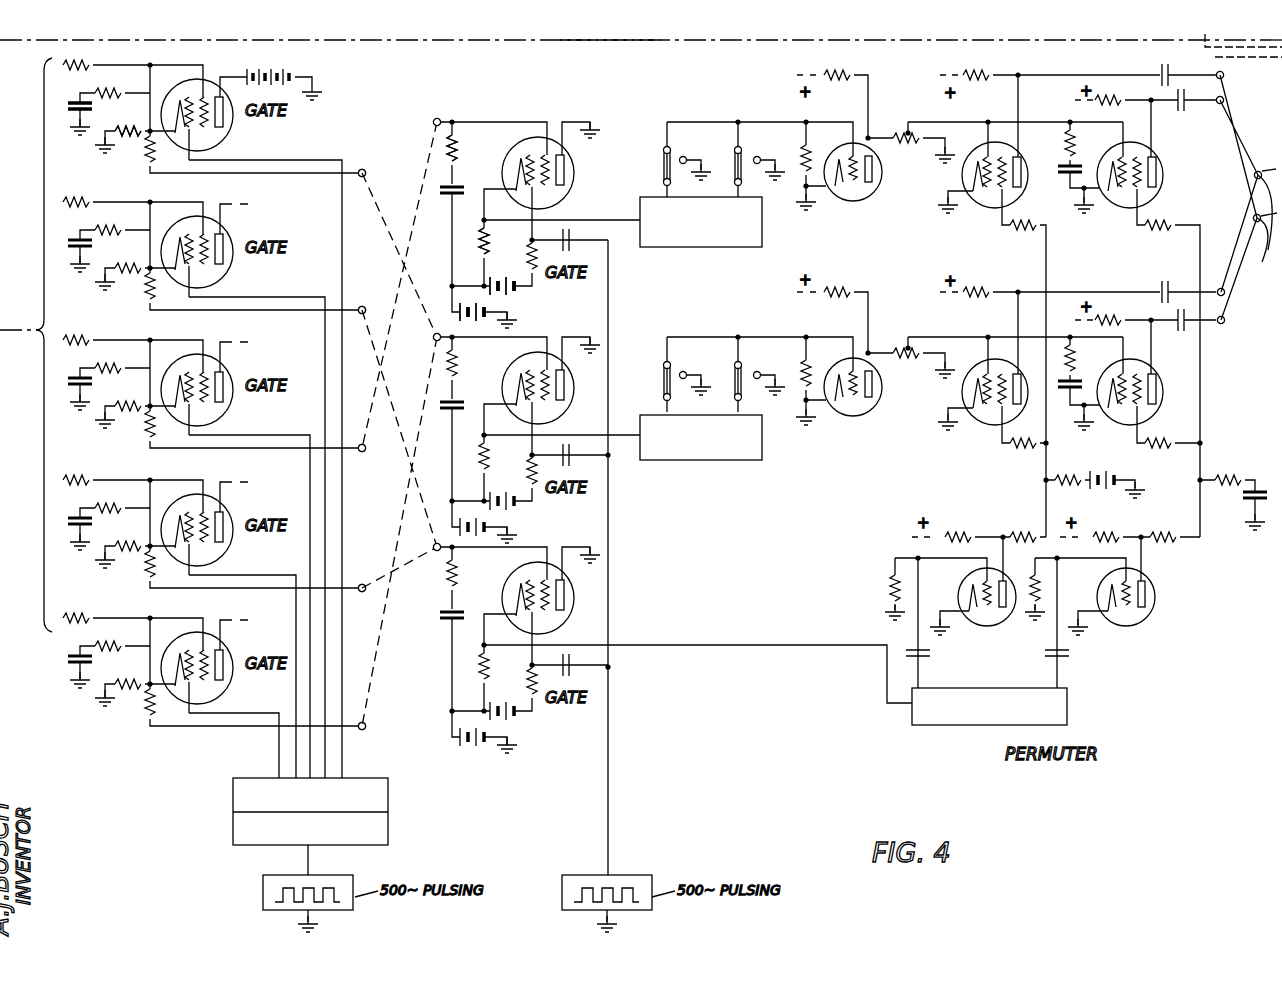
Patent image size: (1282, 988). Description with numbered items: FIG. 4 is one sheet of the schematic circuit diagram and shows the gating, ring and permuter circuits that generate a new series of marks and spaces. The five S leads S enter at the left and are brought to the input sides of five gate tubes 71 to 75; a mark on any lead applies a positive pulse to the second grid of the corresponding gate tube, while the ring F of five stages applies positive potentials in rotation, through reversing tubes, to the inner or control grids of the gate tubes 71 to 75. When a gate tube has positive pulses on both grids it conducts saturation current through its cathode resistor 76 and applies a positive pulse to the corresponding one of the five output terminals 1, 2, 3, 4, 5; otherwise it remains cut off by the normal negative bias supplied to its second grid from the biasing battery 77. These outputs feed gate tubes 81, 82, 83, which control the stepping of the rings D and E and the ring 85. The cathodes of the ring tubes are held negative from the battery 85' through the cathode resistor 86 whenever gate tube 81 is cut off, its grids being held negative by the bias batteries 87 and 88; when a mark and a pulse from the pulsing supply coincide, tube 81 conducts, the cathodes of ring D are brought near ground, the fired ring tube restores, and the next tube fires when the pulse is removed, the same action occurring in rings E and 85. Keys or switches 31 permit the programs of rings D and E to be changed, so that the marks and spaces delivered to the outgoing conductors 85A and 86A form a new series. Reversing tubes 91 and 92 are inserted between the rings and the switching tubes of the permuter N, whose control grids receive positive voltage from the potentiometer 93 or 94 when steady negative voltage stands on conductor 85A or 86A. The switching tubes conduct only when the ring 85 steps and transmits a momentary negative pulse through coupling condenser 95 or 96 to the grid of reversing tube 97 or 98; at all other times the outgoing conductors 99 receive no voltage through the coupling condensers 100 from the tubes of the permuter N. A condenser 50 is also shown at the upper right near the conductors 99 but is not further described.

The gate tube 71 is at (226, 137).
The gate tube 75 is at (226, 690).
The cathode resistor 76 is at (141, 140).
The biasing battery 77 is at (66, 122).
The gate tube 81 is at (568, 183).
The gate tube 82 is at (566, 405).
The gate tube 83 is at (506, 590).
The ring 85 is at (986, 726).
The battery 85' is at (451, 300).
The outgoing conductor 85A is at (770, 108).
The cathode resistor 86 is at (489, 252).
The outgoing conductor 86A is at (775, 325).
The bias battery 87 is at (466, 183).
The bias battery 88 is at (512, 292).
The reversing tube 91 is at (866, 193).
The reversing tube 92 is at (866, 416).
The potentiometer 93 is at (901, 146).
The potentiometer 94 is at (901, 360).
The coupling condenser 95 is at (933, 655).
The coupling condenser 96 is at (1072, 657).
The reversing tube 97 is at (990, 625).
The reversing tube 98 is at (1156, 597).
The outgoing conductor 99 is at (1246, 197).
The coupling condenser 100 is at (1188, 333).
The capacitor 50 is at (1160, 70).
The key or switch 31 is at (663, 160).
The output terminal 1 is at (356, 717).
The output terminal 2 is at (356, 579).
The output terminal 3 is at (356, 439).
The output terminal 4 is at (356, 300).
The output terminal 5 is at (356, 164).
The ring D is at (640, 210).
The ring E is at (644, 426).
The ring F is at (388, 826).
The permuter N is at (1062, 147).
The S lead S is at (610, 46).